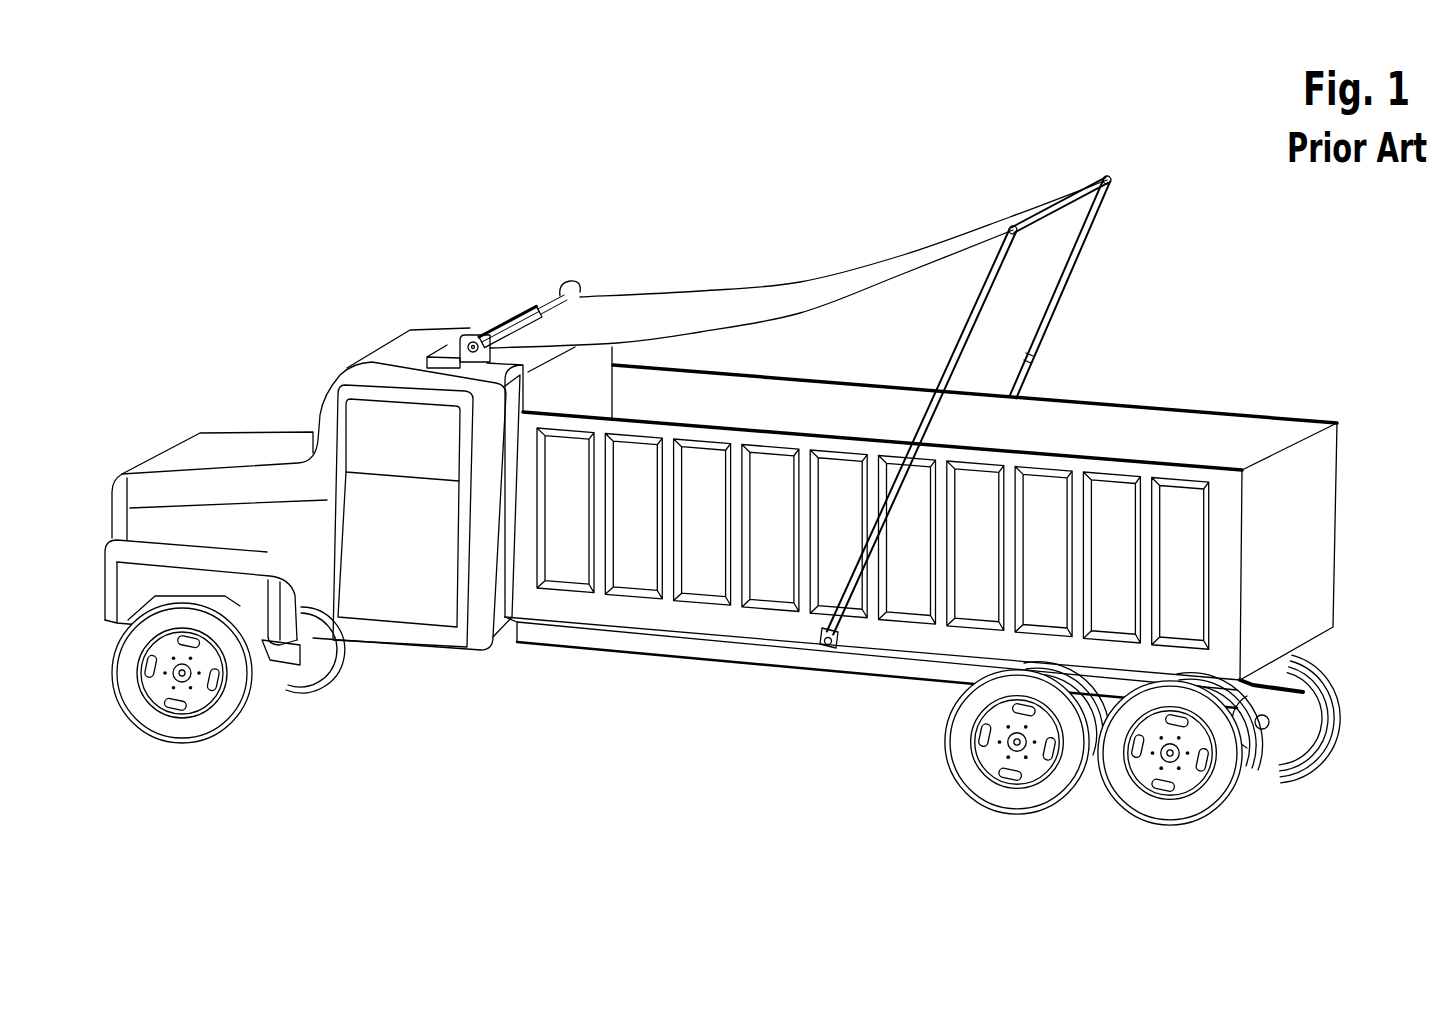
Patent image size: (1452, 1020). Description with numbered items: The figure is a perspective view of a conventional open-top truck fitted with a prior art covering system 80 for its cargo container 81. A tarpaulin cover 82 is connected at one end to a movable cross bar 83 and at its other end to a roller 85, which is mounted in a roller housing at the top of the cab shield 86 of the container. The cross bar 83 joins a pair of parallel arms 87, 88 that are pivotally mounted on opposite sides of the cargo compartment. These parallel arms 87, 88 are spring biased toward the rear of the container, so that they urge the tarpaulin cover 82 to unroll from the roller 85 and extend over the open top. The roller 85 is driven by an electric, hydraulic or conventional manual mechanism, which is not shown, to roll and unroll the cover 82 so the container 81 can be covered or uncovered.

The covering system 80 is at (601, 276).
The cargo container 81 is at (1337, 490).
The tarpaulin cover 82 is at (712, 300).
The cross bar 83 is at (1075, 185).
The roller 85 is at (526, 300).
The cab shield 86 is at (437, 352).
The parallel arm 87 is at (963, 335).
The parallel arm 88 is at (1067, 299).